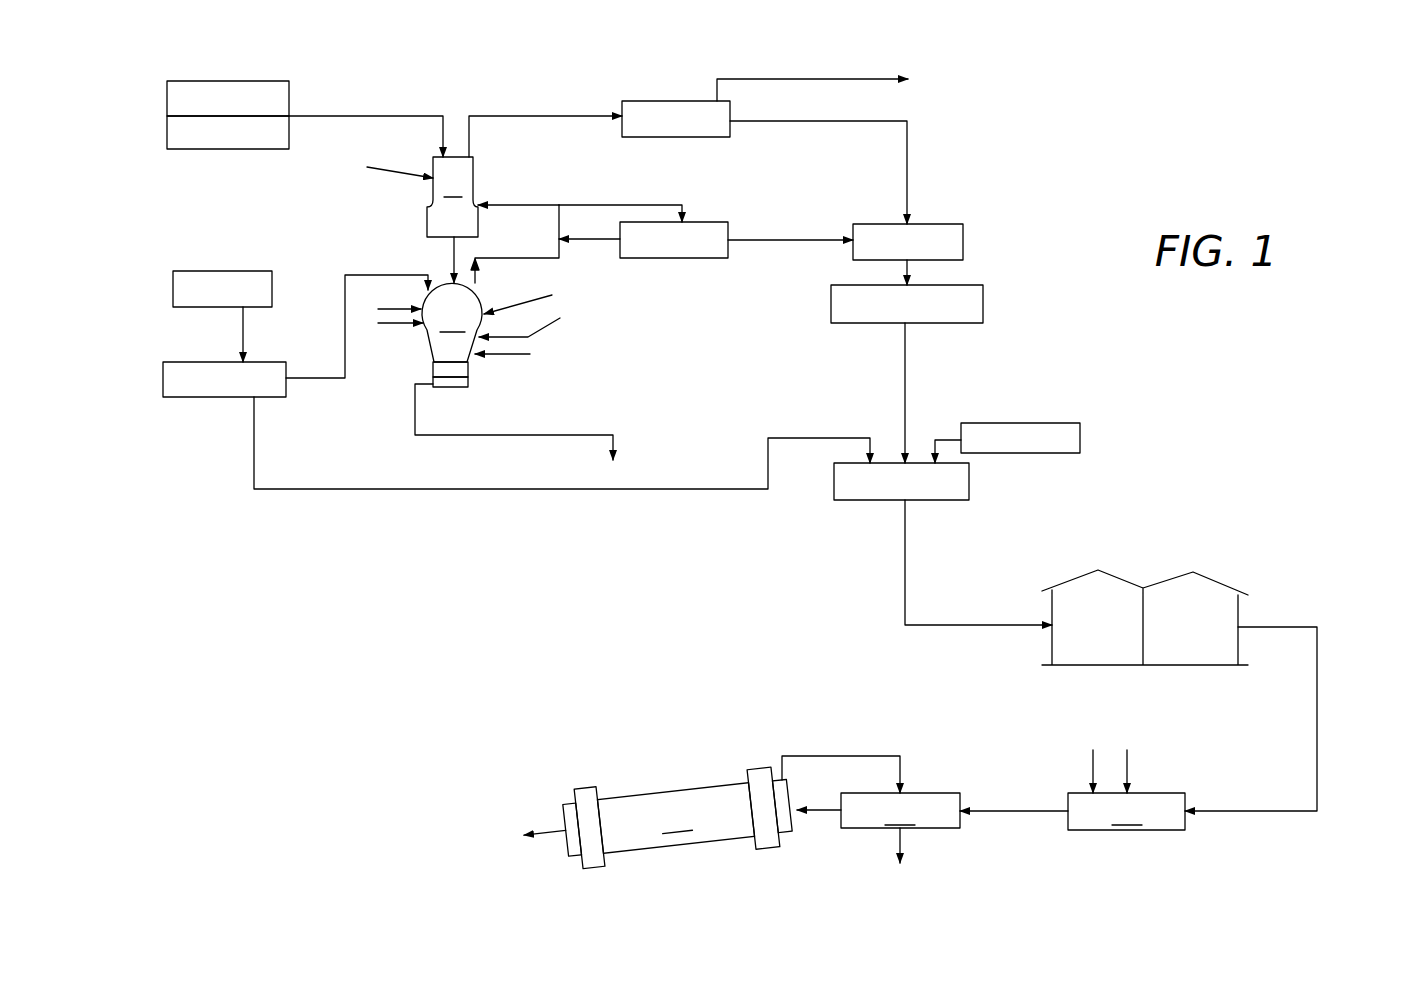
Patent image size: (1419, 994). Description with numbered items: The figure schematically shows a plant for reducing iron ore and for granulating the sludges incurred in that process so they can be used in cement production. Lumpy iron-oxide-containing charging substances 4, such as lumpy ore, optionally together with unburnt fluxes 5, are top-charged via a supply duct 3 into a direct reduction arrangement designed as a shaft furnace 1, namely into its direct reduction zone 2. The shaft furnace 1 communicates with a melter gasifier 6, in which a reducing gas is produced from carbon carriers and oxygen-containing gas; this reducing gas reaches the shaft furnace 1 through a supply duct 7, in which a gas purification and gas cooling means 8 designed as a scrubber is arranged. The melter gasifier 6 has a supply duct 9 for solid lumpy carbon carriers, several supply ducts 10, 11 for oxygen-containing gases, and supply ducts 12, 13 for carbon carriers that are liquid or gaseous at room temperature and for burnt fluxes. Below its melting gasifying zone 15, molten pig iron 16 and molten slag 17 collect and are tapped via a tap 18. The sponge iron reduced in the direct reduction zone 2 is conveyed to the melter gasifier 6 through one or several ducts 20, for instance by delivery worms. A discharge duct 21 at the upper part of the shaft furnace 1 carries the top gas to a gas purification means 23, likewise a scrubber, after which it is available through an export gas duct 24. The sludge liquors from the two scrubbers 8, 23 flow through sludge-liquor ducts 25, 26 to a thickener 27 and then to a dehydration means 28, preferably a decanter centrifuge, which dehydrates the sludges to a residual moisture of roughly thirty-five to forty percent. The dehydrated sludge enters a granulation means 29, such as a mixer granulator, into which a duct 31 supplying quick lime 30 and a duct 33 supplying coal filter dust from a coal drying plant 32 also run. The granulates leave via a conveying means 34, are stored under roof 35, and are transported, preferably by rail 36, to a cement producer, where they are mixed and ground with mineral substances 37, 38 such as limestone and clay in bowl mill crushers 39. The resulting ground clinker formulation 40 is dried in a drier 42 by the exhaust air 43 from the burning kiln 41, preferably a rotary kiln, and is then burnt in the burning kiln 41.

The shaft furnace 1 is at (392, 163).
The direct reduction zone 2 is at (452, 197).
The supply duct 3 is at (338, 115).
The lumpy iron-oxide-containing charging substances 4 is at (240, 90).
The unburnt fluxes 5 is at (245, 137).
The melter gasifier 6 is at (527, 294).
The supply duct 7 is at (557, 258).
The gas purification and gas cooling means 8 is at (670, 247).
The supply duct 9 is at (345, 303).
The supply duct 10 is at (515, 354).
The supply duct 11 is at (531, 318).
The supply duct 12 is at (397, 307).
The supply duct 13 is at (398, 324).
The melting gasifying zone 15 is at (452, 322).
The molten pig iron 16 is at (457, 382).
The molten slag 17 is at (453, 369).
The tap 18 is at (583, 435).
The duct 20 is at (450, 253).
The discharge duct 21 is at (495, 116).
The gas purification means 23 is at (662, 108).
The export gas duct 24 is at (822, 79).
The sludge-liquor duct 25 is at (822, 123).
The sludge-liquor duct 26 is at (805, 240).
The thickener 27 is at (930, 233).
The dehydration means 28 is at (965, 297).
The granulation means 29 is at (932, 490).
The quick lime 30 is at (1020, 435).
The duct 31 is at (945, 437).
The coal drying plant 32 is at (215, 372).
The duct 33 is at (738, 489).
The conveying means 34 is at (960, 625).
The roof 35 is at (225, 282).
The rail 36 is at (1320, 708).
The mineral substance 37 is at (1092, 762).
The mineral substance 38 is at (1128, 763).
The bowl mill crusher 39 is at (1126, 811).
The ground clinker formulation 40 is at (1032, 813).
The burning kiln 41 is at (656, 820).
The drier 42 is at (878, 828).
The exhaust air 43 is at (875, 756).